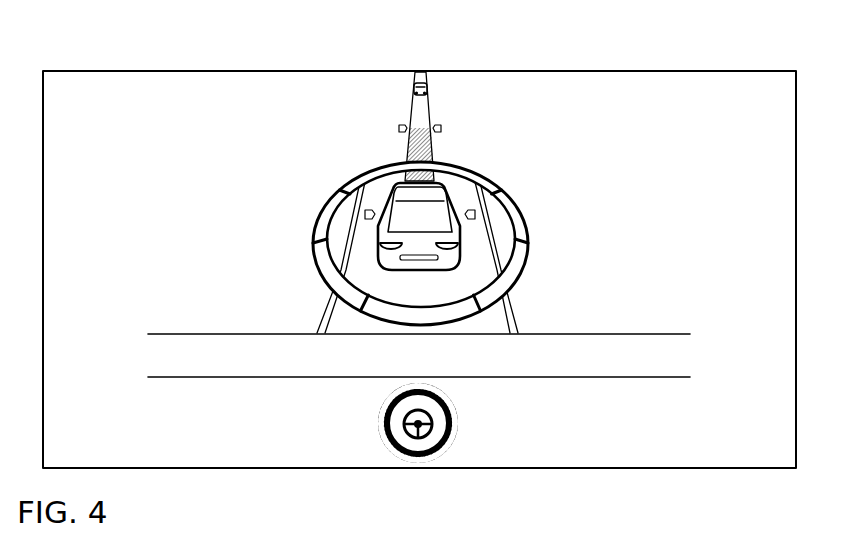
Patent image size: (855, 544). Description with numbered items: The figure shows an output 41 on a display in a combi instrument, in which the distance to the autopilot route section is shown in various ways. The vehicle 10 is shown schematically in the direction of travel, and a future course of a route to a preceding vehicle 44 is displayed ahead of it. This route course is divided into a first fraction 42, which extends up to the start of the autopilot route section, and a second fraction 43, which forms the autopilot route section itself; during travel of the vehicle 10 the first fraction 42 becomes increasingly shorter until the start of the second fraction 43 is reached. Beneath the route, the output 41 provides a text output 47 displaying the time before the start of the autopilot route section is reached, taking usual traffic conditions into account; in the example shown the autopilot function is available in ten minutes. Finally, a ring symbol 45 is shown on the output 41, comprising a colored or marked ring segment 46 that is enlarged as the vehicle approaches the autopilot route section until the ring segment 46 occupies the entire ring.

The output 41 is at (166, 69).
The first fraction 42 is at (425, 147).
The second fraction 43 is at (422, 111).
The preceding vehicle 44 is at (412, 91).
The vehicle 10 is at (444, 238).
The text output 47 is at (644, 357).
The ring symbol 45 is at (406, 423).
The ring segment 46 is at (457, 429).